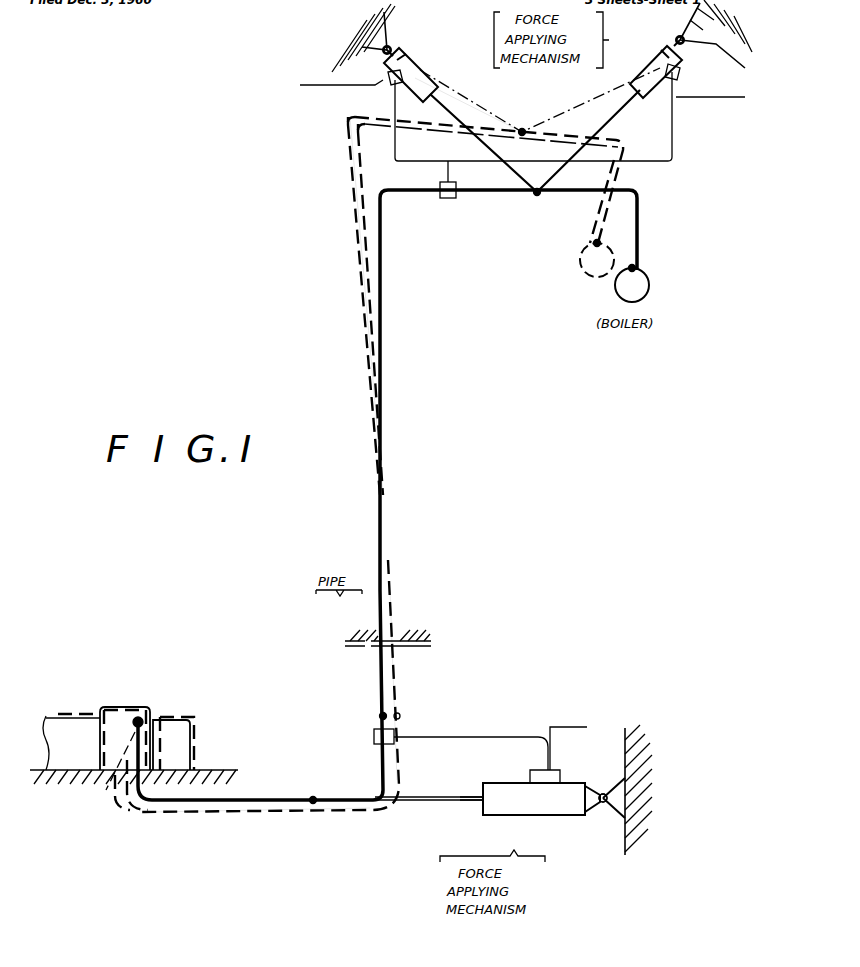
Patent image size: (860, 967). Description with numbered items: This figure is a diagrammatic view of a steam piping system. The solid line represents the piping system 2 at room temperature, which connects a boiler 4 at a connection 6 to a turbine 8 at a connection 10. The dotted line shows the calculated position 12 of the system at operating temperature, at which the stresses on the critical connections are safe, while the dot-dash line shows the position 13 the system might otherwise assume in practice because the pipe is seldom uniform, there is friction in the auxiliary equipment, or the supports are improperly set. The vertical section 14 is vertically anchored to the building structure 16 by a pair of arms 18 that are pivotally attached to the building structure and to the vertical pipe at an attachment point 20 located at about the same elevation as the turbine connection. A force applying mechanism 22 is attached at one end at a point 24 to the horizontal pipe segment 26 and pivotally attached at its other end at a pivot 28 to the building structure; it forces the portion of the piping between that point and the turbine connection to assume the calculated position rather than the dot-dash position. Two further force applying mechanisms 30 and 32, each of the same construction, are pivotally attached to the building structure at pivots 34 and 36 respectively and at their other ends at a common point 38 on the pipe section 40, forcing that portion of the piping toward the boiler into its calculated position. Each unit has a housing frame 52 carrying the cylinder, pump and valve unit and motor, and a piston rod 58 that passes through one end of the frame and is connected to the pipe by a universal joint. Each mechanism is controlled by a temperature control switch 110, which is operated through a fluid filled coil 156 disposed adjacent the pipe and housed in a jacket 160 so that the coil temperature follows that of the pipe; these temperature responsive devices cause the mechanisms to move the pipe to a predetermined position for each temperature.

The piping system 2 is at (370, 615).
The boiler 4 is at (618, 290).
The connection 6 is at (640, 265).
The turbine 8 is at (130, 707).
The connection 10 is at (135, 720).
The calculated position 12 is at (348, 168).
The possible position 13 is at (369, 148).
The vertical section 14 is at (400, 603).
The building structure 16 is at (352, 640).
The arms 18 is at (383, 678).
The attachment point 20 is at (381, 716).
The force applying mechanism 22 is at (521, 814).
The attachment point 24 is at (312, 806).
The horizontal pipe segment 26 is at (205, 812).
The pivotal attachment 28 is at (603, 806).
The force applying mechanism 30 is at (650, 60).
The force applying mechanism 32 is at (436, 62).
The pivotal attachment 34 is at (677, 37).
The pivotal attachment 36 is at (391, 47).
The pipe attachment point 38 is at (538, 196).
The pipe section 40 is at (512, 193).
The housing frame 52 is at (428, 92).
The piston rod 58 is at (465, 122).
The temperature control switch 110 is at (390, 82).
The fluid filled coil 156 is at (462, 737).
The jacket 160 is at (448, 198).